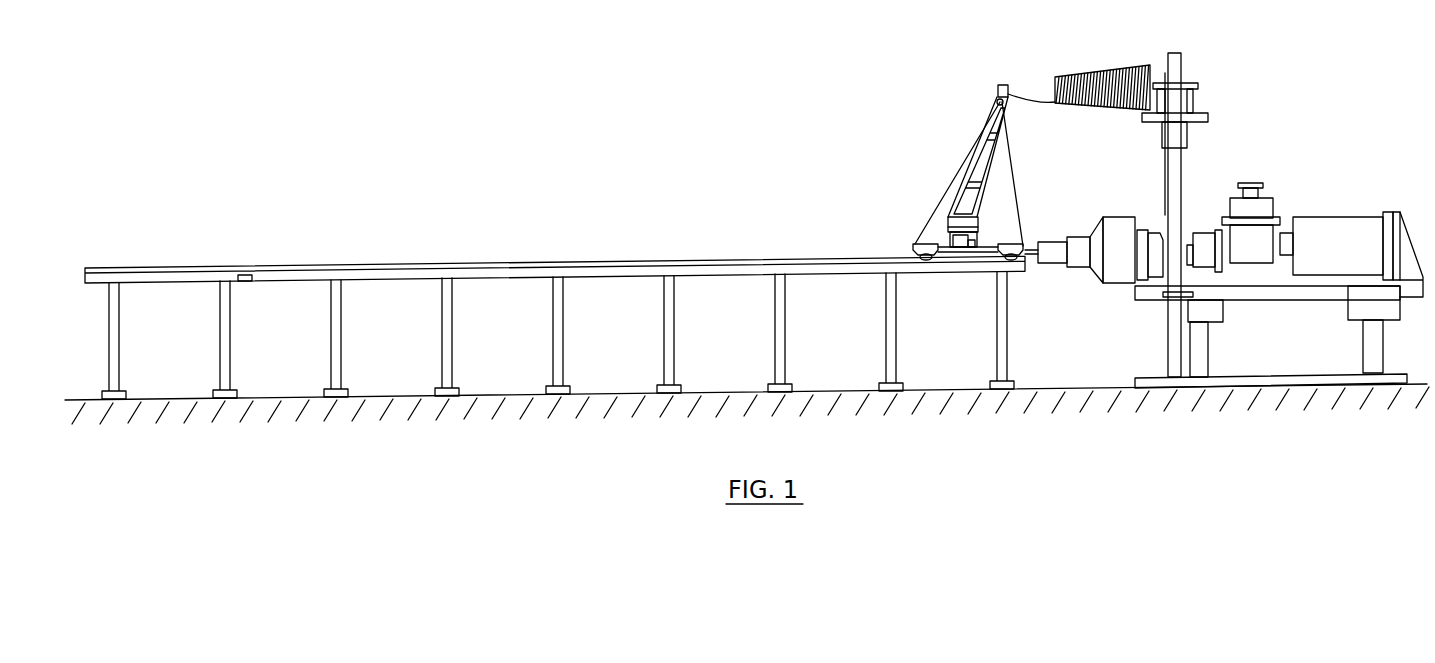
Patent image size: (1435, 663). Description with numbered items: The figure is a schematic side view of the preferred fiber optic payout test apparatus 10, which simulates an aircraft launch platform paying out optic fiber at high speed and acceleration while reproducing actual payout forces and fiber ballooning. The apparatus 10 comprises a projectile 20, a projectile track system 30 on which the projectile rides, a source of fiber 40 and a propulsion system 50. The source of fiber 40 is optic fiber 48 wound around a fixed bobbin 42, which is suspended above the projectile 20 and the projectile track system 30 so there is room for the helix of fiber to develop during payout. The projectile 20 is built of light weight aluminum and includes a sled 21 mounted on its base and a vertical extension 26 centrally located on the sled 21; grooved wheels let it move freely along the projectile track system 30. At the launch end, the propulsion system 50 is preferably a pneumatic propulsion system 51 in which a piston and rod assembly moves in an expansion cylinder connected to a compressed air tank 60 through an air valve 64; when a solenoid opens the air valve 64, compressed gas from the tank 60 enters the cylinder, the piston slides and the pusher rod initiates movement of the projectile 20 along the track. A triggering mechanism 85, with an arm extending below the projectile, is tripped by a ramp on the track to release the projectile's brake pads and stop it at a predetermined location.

The fiber optic payout test apparatus 10 is at (1282, 118).
The projectile 20 is at (944, 172).
The sled 21 is at (920, 243).
The vertical extension 26 is at (965, 165).
The projectile track system 30 is at (640, 260).
The source of fiber 40 is at (1105, 200).
The bobbin 42 is at (1055, 72).
The optic fiber 48 is at (1032, 98).
The propulsion system 50 is at (1062, 230).
The pneumatic propulsion system 51 is at (1122, 215).
The compressed air tank 60 is at (1320, 217).
The air valve 64 is at (1250, 178).
The triggering mechanism 85 is at (243, 284).